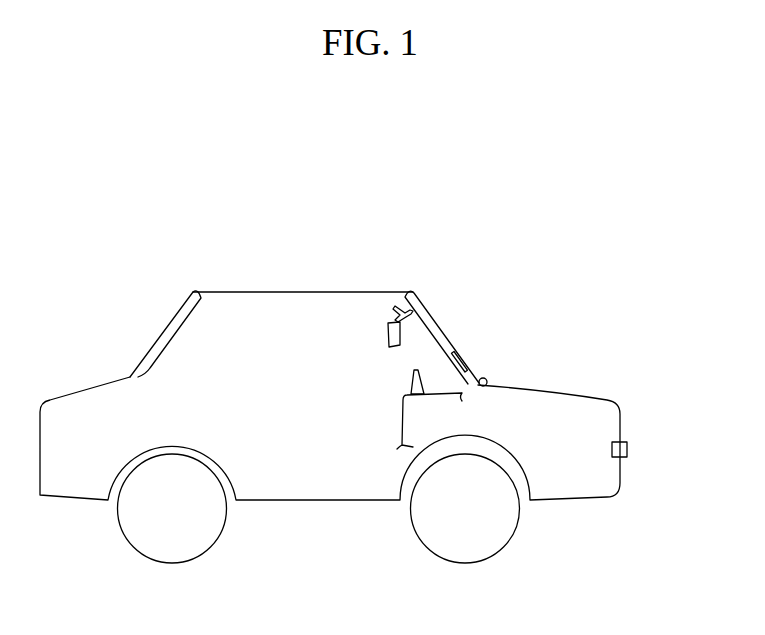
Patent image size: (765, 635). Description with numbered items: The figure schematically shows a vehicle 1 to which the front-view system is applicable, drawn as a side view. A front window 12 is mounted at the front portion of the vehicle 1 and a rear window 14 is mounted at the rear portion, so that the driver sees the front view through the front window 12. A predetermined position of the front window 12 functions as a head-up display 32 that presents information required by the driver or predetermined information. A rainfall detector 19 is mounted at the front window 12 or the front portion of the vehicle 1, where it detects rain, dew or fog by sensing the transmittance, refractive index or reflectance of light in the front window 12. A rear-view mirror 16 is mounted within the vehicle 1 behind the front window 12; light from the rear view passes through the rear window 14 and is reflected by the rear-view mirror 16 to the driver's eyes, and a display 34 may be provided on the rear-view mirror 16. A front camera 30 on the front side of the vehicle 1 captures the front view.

The vehicle 1 is at (500, 317).
The front window 12 is at (431, 321).
The rear window 14 is at (167, 333).
The rear-view mirror 16 is at (387, 337).
The rainfall detector 19 is at (488, 381).
The front camera 30 is at (628, 449).
The head-up display 32 is at (472, 362).
The display 34 is at (412, 372).